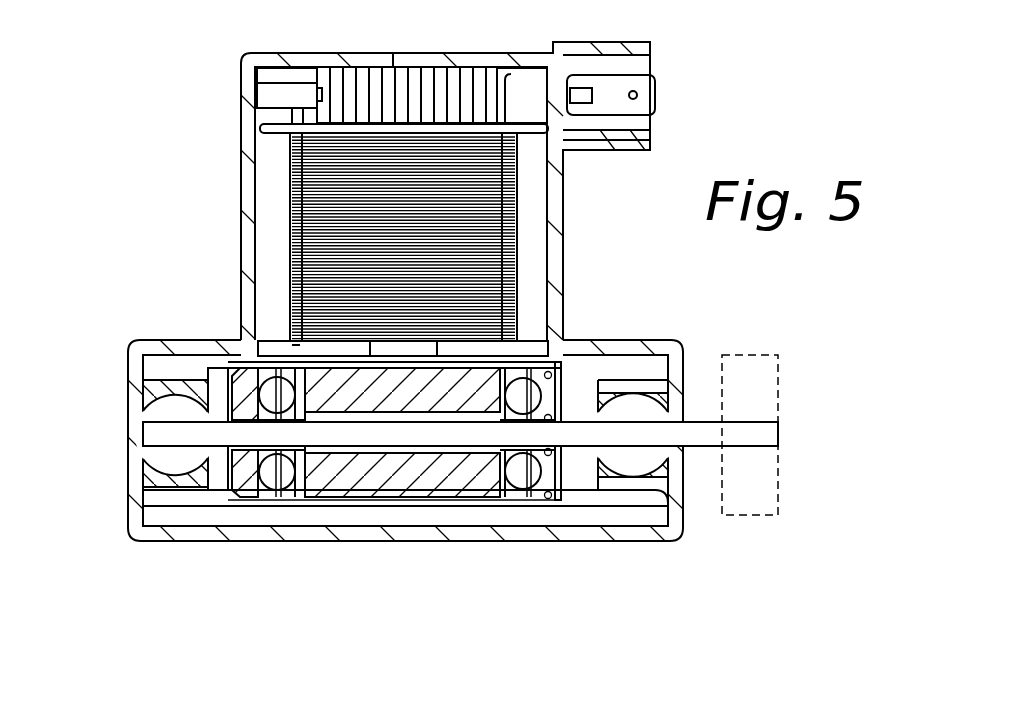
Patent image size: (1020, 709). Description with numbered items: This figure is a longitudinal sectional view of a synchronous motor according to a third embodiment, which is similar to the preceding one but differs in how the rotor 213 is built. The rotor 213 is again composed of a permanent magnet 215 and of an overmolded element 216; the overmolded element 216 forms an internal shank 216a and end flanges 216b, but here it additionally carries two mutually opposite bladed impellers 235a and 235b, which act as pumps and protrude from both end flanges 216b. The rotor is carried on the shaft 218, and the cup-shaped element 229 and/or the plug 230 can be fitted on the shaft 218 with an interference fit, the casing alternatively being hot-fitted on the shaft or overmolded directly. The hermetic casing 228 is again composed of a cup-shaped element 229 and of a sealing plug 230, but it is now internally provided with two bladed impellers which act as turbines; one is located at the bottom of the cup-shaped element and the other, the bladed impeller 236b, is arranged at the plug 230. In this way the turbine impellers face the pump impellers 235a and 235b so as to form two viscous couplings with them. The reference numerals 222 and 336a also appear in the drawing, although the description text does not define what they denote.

The rotor 213 is at (476, 352).
The permanent magnet 215 is at (478, 490).
The overmolded element 216 is at (431, 506).
The internal shank 216a is at (450, 457).
The end flanges 216b is at (296, 482).
The shaft 218 is at (178, 430).
The shaft end / coupling 222 is at (754, 358).
The hermetic casing 228 is at (567, 367).
The cup-shaped element 229 is at (292, 358).
The sealing plug 230 is at (562, 476).
The bladed impeller 235a is at (288, 487).
The bladed impeller 235b is at (588, 476).
The bladed impeller 236b is at (565, 395).
The bearing holder 336a is at (267, 473).